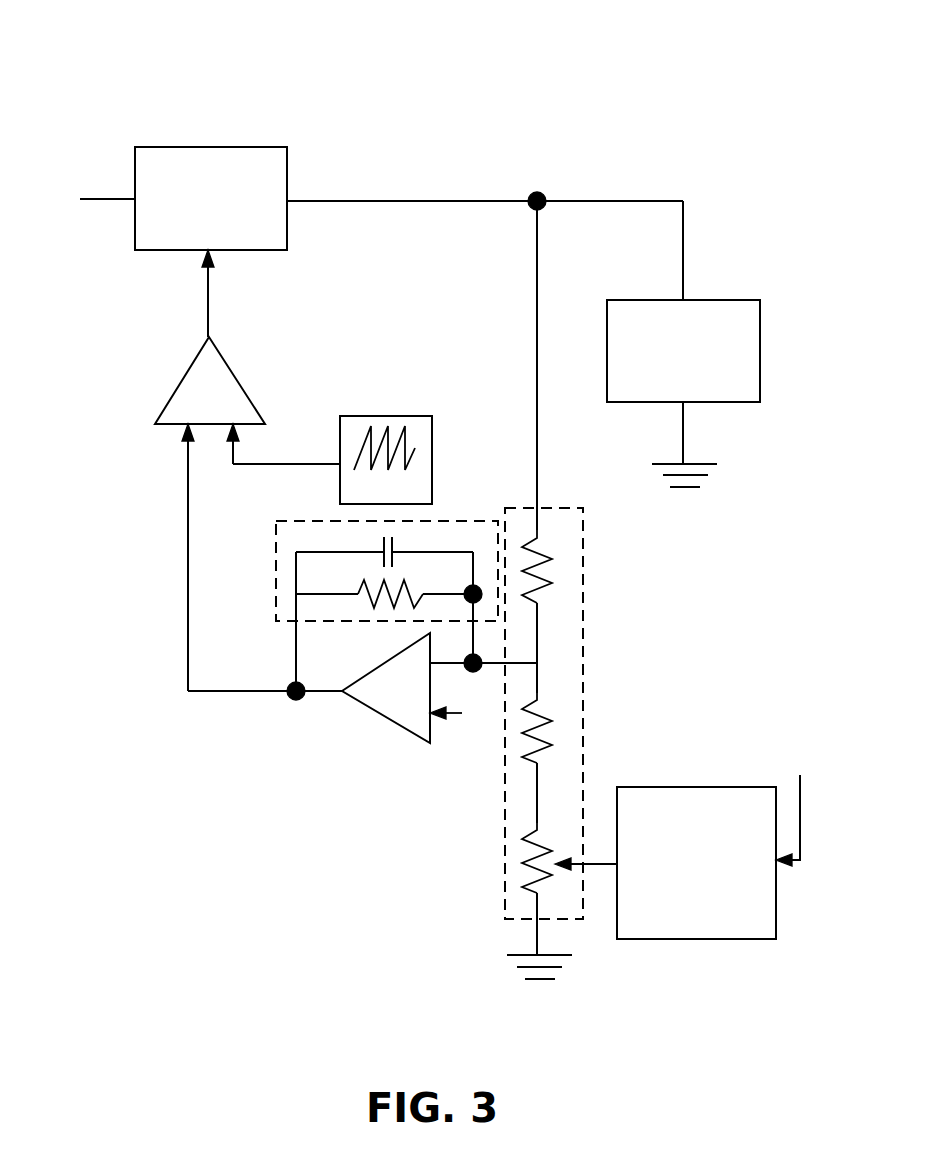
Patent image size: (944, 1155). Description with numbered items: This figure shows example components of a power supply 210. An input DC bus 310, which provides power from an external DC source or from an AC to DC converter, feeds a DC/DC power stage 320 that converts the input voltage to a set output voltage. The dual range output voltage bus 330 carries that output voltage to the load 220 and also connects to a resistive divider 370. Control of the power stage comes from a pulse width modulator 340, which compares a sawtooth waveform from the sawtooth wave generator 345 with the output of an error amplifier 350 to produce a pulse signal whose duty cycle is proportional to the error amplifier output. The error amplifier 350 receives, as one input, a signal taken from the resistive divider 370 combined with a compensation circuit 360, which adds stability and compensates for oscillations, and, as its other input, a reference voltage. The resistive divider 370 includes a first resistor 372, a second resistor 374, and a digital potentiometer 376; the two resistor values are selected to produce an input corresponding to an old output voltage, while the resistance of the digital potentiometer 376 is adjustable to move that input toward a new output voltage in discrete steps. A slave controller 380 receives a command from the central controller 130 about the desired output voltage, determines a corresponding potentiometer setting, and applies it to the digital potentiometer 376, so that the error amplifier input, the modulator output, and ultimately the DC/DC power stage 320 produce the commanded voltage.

The power supply 210 is at (186, 80).
The input direct current (DC) bus 310 is at (81, 206).
The DC/DC power stage 320 is at (211, 198).
The dual range output voltage bus 330 is at (485, 340).
The load 220 is at (683, 393).
The pulse width modulator 340 is at (247, 470).
The sawtooth wave generator 345 is at (386, 460).
The compensation circuit 360 is at (470, 505).
The error amplifier 350 is at (362, 688).
The resistive divider 370 is at (539, 743).
The first resistor 372 is at (569, 573).
The second resistor 374 is at (569, 735).
The digital potentiometer 376 is at (506, 854).
The slave controller 380 is at (665, 863).
The central controller 130 is at (796, 770).